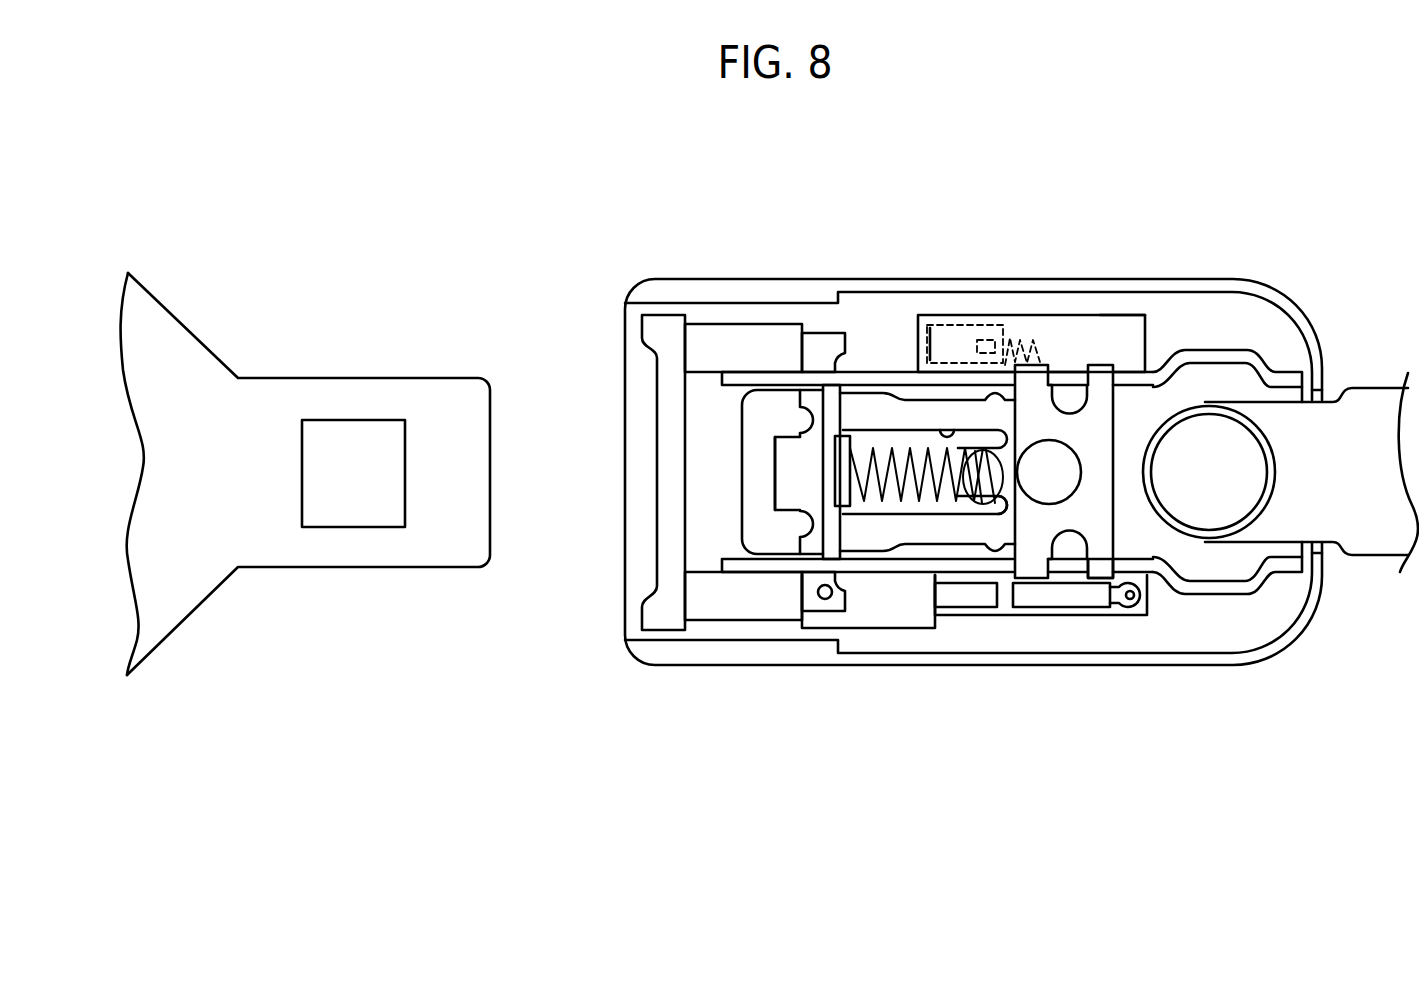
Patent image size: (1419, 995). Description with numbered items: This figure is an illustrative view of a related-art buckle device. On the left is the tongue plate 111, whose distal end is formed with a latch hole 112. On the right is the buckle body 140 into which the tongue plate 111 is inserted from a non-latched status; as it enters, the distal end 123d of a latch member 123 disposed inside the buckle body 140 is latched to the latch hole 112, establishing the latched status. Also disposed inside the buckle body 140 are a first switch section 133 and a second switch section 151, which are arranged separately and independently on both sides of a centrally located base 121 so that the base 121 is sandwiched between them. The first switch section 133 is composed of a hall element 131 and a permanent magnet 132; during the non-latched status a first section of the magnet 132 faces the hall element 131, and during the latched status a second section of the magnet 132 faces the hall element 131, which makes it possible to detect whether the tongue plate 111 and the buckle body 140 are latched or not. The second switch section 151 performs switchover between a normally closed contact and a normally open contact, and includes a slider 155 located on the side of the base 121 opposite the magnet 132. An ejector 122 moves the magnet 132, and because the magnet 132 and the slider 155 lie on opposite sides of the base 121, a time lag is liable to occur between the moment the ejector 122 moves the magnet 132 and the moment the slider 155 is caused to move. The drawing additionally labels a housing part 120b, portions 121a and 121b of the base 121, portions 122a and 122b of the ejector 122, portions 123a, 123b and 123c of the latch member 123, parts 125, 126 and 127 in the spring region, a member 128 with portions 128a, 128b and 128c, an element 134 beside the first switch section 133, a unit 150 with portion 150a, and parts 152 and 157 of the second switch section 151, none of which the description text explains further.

The tongue plate 111 is at (305, 474).
The latch hole 112 is at (348, 527).
The housing body 120b is at (878, 279).
The base 121 is at (1280, 416).
The raised portion of cable holder 121a is at (1217, 372).
The holding arm 121b is at (1160, 363).
The ejector 122 is at (937, 452).
The guide rail 122a is at (733, 400).
The guide stopper 122b is at (808, 348).
The latch member 123 is at (842, 472).
The slider lower tab 123a is at (1100, 570).
The slider upper notch 123b is at (946, 432).
The slider lower notch 123c is at (995, 510).
The distal end of latch member 123d is at (778, 476).
The spring holder 125 is at (908, 450).
The spring seat 126 is at (845, 508).
The coil spring 127 is at (843, 478).
The lock member 128 is at (712, 452).
The lock plate 128a is at (663, 327).
The lock arm 128b is at (710, 338).
The lock claw 128c is at (782, 372).
The hall element 131 is at (983, 340).
The permanent magnet 132 is at (946, 325).
The first switch section 133 is at (954, 274).
The wiring 134 is at (1038, 335).
The buckle body 140 is at (850, 428).
The control unit 150 is at (1034, 267).
The control unit casing 150a is at (1118, 313).
The second switch section 151 is at (974, 665).
The switch 152 is at (1060, 626).
The slider 155 is at (904, 649).
The pivot pin 157 is at (835, 598).